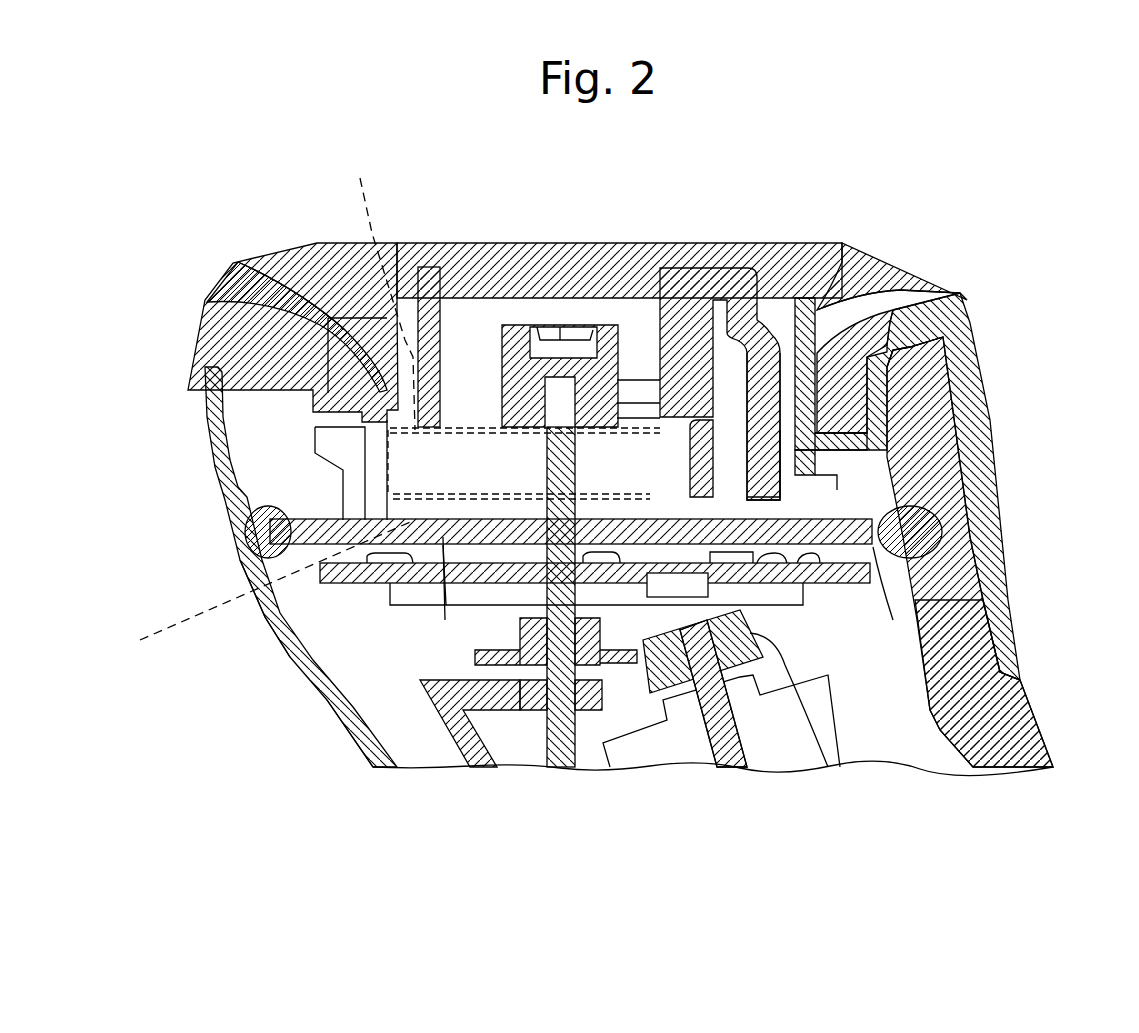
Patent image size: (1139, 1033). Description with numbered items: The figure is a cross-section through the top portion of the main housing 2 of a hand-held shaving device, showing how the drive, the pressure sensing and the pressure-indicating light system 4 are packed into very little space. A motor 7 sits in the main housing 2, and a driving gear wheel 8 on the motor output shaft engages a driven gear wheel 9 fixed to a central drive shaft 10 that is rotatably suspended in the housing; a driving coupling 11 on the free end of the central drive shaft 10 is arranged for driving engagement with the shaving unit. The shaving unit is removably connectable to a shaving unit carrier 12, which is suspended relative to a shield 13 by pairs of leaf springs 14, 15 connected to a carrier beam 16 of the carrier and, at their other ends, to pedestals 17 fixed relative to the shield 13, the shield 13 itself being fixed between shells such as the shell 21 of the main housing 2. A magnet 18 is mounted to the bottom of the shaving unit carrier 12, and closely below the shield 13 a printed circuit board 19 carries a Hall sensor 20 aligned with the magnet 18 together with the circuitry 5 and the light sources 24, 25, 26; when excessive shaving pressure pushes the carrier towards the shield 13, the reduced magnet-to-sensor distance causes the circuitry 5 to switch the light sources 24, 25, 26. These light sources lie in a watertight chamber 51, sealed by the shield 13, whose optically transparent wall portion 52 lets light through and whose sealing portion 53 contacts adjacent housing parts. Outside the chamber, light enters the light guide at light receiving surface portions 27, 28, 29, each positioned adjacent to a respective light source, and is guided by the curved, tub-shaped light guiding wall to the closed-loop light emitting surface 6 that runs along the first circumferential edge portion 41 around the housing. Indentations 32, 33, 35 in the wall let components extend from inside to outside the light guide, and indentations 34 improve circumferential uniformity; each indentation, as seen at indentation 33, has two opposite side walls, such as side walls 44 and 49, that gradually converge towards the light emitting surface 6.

The main housing 2 is at (262, 633).
The light system 4 is at (968, 296).
The circuitry 5 is at (725, 650).
The light emitting surface 6 is at (212, 292).
The motor 7 is at (690, 745).
The driving gear wheel 8 is at (812, 605).
The driven gear wheel 9 is at (533, 668).
The central drive shaft 10 is at (565, 740).
The driving coupling 11 is at (540, 323).
The shaving unit carrier 12 is at (730, 268).
The shield 13 is at (880, 579).
The leaf spring 14 is at (378, 289).
The leaf spring 15 is at (260, 592).
The carrier beam 16 is at (762, 405).
The pedestal 17 is at (362, 447).
The magnet 18 is at (805, 480).
The printed circuit board 19 is at (988, 604).
The Hall sensor 20 is at (872, 560).
The shell 21 is at (352, 725).
The light source 24 is at (395, 548).
The light source 25 is at (680, 600).
The light source 26 is at (873, 547).
The light receiving surface portion 27 is at (418, 520).
The light receiving surface portion 28 is at (597, 427).
The light receiving surface portion 29 is at (855, 522).
The indentation 32 is at (880, 405).
The indentation 33 is at (637, 463).
The indentation 34 is at (460, 340).
The indentation 35 is at (385, 498).
The first circumferential edge portion 41 is at (225, 262).
The side wall 44 is at (838, 505).
The side wall 49 is at (385, 437).
The watertight chamber 51 is at (323, 620).
The optically transparent wall portion 52 is at (445, 545).
The sealing portion 53 is at (258, 535).